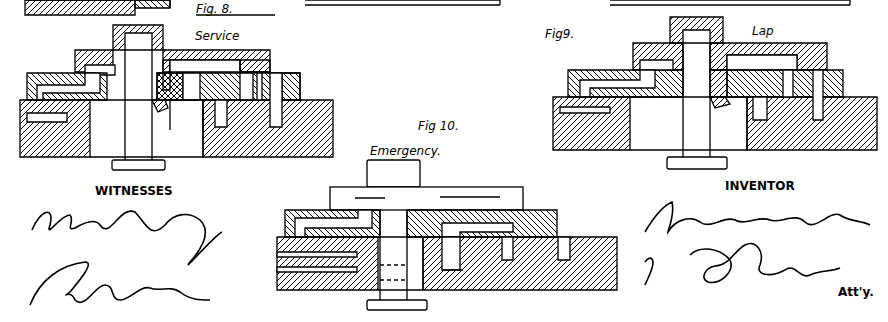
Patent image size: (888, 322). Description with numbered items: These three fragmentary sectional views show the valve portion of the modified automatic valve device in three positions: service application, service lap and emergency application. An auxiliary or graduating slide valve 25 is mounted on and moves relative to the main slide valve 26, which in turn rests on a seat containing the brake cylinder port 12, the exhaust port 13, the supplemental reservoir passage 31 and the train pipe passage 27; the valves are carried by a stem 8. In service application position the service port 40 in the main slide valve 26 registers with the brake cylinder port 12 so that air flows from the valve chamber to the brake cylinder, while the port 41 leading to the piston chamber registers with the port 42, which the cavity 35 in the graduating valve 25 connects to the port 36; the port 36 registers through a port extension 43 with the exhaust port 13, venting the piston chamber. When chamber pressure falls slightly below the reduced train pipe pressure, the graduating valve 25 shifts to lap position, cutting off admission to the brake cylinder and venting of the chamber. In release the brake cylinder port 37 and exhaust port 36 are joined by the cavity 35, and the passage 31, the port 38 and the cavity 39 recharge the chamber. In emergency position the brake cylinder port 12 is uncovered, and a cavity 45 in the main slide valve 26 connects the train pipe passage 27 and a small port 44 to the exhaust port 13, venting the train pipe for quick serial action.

In FIG. 8, the valve stem 8 is at (125, 122).
In FIG. 9, the valve stem 8 is at (683, 122).
In FIG. 10, the valve stem 8 is at (397, 235).
In FIG. 8, the brake cylinder port 12 is at (290, 95).
In FIG. 9, the brake cylinder port 12 is at (840, 93).
In FIG. 10, the brake cylinder port 12 is at (565, 258).
In FIG. 8, the exhaust port 13 is at (220, 120).
In FIG. 9, the exhaust port 13 is at (760, 118).
In FIG. 10, the exhaust port 13 is at (508, 258).
In FIG. 8, the graduating slide valve 25 is at (100, 50).
In FIG. 9, the graduating slide valve 25 is at (820, 43).
In FIG. 10, the graduating slide valve 25 is at (523, 190).
In FIG. 8, the main slide valve 26 is at (40, 73).
In FIG. 9, the main slide valve 26 is at (840, 72).
In FIG. 10, the main slide valve 26 is at (557, 216).
In FIG. 10, the train pipe passage 27 is at (290, 272).
In FIG. 8, the supplemental reservoir passage 31 is at (50, 122).
In FIG. 9, the supplemental reservoir passage 31 is at (560, 112).
In FIG. 10, the supplemental reservoir passage 31 is at (288, 245).
In FIG. 8, the cavity 35 is at (268, 52).
In FIG. 9, the cavity 35 is at (745, 60).
In FIG. 8, the exhaust port of main slide valve 36 is at (180, 90).
In FIG. 9, the exhaust port of main slide valve 36 is at (727, 82).
In FIG. 8, the brake cylinder port of main slide valve 37 is at (250, 95).
In FIG. 9, the brake cylinder port of main slide valve 37 is at (790, 95).
In FIG. 8, the port 38 is at (63, 88).
In FIG. 9, the port 38 is at (612, 82).
In FIG. 10, the port 38 is at (316, 222).
In FIG. 8, the cavity 39 is at (115, 70).
In FIG. 8, the service port 40 is at (270, 75).
In FIG. 8, the port 41 is at (168, 100).
In FIG. 8, the port 42 is at (172, 62).
In FIG. 8, the port extension 43 is at (205, 112).
In FIG. 10, the small port 44 is at (465, 265).
In FIG. 10, the cavity 45 is at (480, 228).